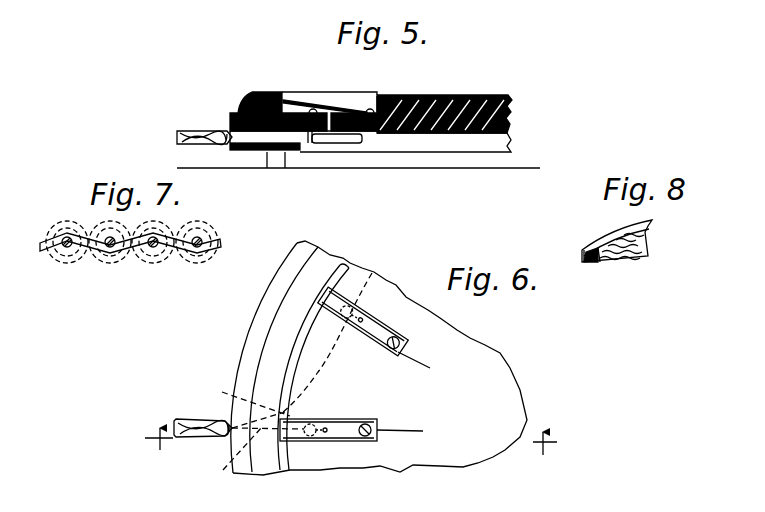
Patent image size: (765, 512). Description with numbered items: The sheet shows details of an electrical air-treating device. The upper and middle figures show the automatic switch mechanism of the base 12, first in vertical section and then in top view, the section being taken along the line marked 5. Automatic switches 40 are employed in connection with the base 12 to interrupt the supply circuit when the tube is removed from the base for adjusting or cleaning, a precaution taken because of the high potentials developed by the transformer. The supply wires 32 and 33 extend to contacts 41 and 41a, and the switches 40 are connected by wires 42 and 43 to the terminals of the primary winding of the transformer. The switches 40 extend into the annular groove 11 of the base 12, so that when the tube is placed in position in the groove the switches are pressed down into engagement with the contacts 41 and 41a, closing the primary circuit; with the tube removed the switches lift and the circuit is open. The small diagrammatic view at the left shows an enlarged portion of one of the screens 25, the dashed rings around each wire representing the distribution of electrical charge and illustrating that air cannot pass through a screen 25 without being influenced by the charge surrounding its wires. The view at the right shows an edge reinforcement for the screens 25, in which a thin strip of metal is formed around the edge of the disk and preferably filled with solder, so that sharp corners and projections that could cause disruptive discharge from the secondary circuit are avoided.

In FIG. 5, the annular groove 11 is at (285, 100).
In FIG. 6, the annular groove 11 is at (300, 345).
In FIG. 5, the base 12 is at (510, 107).
In FIG. 6, the base 12 is at (282, 272).
In FIG. 7, the screen 25 is at (197, 251).
In FIG. 8, the screen 25 is at (630, 257).
In FIG. 5, the supply wire 32 is at (310, 135).
In FIG. 6, the supply wire 32 is at (248, 462).
In FIG. 5, the supply wire 33 is at (327, 138).
In FIG. 6, the supply wire 33 is at (239, 404).
In FIG. 5, the automatic switch 40 is at (293, 103).
In FIG. 6, the automatic switch 40 is at (373, 337).
In FIG. 6, the contact 41 is at (312, 435).
In FIG. 6, the contact 41a is at (350, 266).
In FIG. 5, the wire 42 is at (423, 88).
In FIG. 6, the wire 42 is at (400, 418).
In FIG. 6, the wire 43 is at (420, 352).
In FIG. 6, the section line of Fig. 5 is at (352, 441).